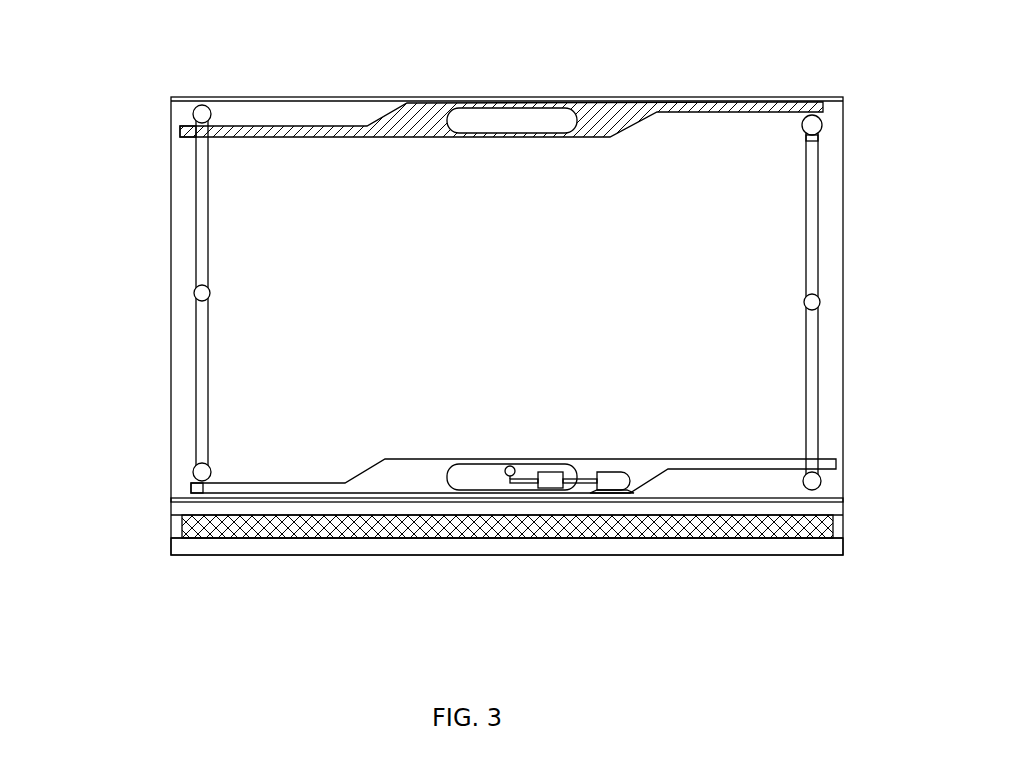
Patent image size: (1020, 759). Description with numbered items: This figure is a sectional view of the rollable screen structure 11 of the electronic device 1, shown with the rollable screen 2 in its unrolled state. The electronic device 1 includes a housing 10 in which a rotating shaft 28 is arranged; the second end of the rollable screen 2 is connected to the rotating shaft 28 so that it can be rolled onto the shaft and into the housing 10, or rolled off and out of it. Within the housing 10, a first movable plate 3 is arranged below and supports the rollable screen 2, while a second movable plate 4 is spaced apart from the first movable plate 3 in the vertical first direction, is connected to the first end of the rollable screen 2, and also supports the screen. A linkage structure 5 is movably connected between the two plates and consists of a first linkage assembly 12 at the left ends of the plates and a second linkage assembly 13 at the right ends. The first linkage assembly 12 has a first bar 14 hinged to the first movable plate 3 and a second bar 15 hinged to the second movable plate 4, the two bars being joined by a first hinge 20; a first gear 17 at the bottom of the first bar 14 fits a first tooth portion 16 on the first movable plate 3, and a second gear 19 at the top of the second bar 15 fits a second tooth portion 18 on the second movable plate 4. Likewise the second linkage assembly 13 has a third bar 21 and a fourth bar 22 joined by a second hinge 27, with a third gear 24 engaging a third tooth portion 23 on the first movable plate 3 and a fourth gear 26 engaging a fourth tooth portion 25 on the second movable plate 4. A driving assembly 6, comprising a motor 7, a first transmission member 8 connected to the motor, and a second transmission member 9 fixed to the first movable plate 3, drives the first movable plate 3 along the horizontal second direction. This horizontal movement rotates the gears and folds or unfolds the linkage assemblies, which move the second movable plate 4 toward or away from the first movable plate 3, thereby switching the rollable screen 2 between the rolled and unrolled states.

The electronic device 1 is at (504, 58).
The rollable screen 2 is at (843, 190).
The first movable plate 3 is at (305, 489).
The second movable plate 4 is at (630, 103).
The linkage structure 5 is at (84, 297).
The driving assembly 6 is at (584, 548).
The motor 7 is at (626, 531).
The first transmission member 8 is at (565, 488).
The second transmission member 9 is at (508, 478).
The housing 10 is at (843, 538).
The rollable screen structure 11 is at (326, 150).
The first linkage assembly 12 is at (142, 264).
The second linkage assembly 13 is at (865, 276).
The first bar 14 is at (200, 323).
The second bar 15 is at (200, 248).
The first tooth portion 16 is at (192, 486).
The first gear 17 is at (193, 468).
The second tooth portion 18 is at (193, 122).
The second gear 19 is at (202, 105).
The first hinge 20 is at (196, 287).
The third bar 21 is at (813, 347).
The fourth bar 22 is at (813, 263).
The third tooth portion 23 is at (818, 478).
The third gear 24 is at (818, 488).
The fourth tooth portion 25 is at (822, 116).
The fourth gear 26 is at (821, 128).
The second hinge 27 is at (816, 297).
The rotating shaft 28 is at (357, 538).